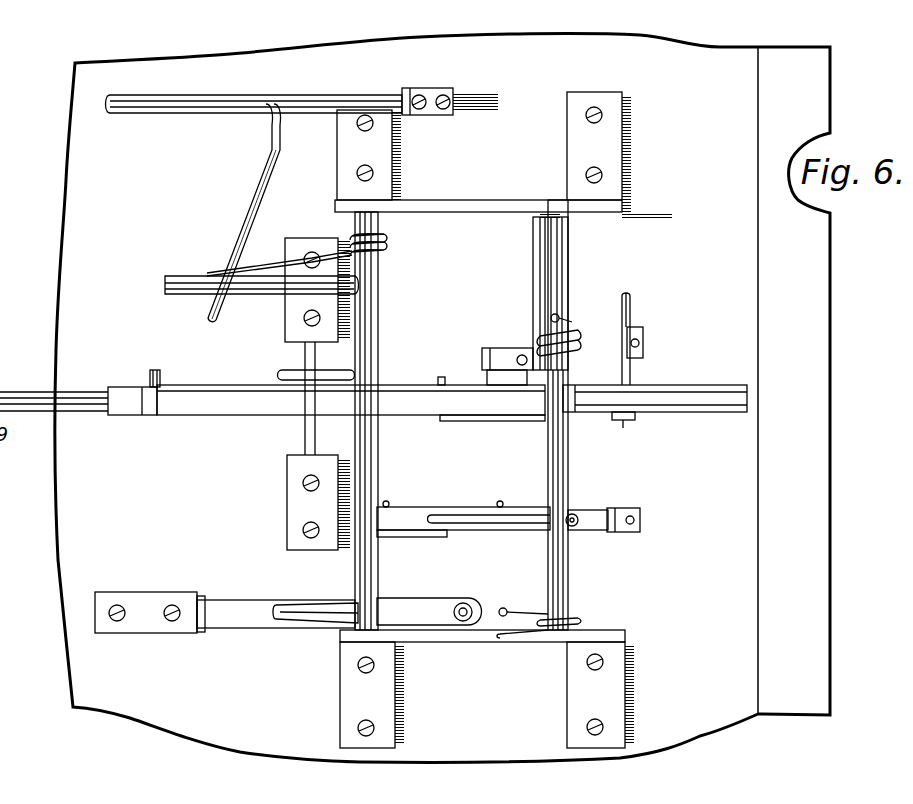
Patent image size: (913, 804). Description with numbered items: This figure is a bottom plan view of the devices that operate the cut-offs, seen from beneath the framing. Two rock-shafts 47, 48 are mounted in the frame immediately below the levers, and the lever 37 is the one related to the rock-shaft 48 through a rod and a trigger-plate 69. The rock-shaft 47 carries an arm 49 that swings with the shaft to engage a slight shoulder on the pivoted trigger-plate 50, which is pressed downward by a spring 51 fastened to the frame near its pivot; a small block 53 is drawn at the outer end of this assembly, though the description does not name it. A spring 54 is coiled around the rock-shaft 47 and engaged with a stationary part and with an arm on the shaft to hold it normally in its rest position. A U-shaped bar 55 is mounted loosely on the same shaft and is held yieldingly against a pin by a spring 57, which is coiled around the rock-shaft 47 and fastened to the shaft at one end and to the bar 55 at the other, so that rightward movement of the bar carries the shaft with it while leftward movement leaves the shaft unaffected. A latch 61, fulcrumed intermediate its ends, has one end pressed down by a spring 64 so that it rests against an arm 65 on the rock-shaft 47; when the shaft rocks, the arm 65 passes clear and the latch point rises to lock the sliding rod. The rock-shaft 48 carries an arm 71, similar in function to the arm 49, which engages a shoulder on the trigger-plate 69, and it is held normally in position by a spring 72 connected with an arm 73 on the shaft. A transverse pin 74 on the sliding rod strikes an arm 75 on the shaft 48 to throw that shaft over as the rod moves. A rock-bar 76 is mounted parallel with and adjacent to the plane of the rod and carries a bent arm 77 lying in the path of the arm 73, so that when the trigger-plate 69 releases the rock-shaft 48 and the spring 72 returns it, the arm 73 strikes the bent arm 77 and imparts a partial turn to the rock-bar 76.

The lever 37 is at (478, 602).
The rock-shaft 47 is at (556, 572).
The rock-shaft 48 is at (370, 568).
The arm 49 is at (486, 523).
The trigger-plate 50 is at (518, 530).
The spring 51 is at (470, 507).
The stop block 53 is at (620, 520).
The spring 54 is at (575, 620).
The U-shaped bar 55 is at (531, 298).
The spring 57 is at (574, 342).
The latch 61 is at (351, 384).
The spring 64 is at (632, 302).
The arm 65 is at (680, 392).
The trigger-plate 69 is at (268, 630).
The arm 71 is at (322, 626).
The spring 72 is at (258, 266).
The arm 73 is at (268, 294).
The transverse pin 74 is at (162, 374).
The arm 75 is at (362, 372).
The rock-bar 76 is at (225, 113).
The bent arm 77 is at (243, 226).